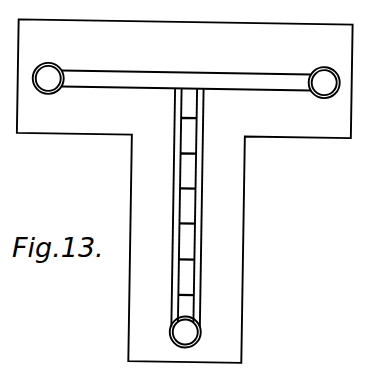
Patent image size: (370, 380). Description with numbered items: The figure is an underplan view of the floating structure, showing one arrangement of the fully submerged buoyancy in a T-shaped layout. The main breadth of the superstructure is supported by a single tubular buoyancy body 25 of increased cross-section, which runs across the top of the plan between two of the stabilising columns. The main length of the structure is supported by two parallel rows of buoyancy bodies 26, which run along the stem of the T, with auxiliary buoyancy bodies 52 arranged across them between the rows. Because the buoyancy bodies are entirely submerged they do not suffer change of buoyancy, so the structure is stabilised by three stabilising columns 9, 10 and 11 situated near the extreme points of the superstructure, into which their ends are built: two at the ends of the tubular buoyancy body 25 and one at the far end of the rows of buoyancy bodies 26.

The stabilising column 9 is at (42, 81).
The stabilising column 10 is at (322, 82).
The stabilising column 11 is at (192, 333).
The tubular buoyancy body 25 is at (245, 77).
The buoyancy bodies 26 is at (200, 163).
The auxiliary buoyancy body 52 is at (192, 225).